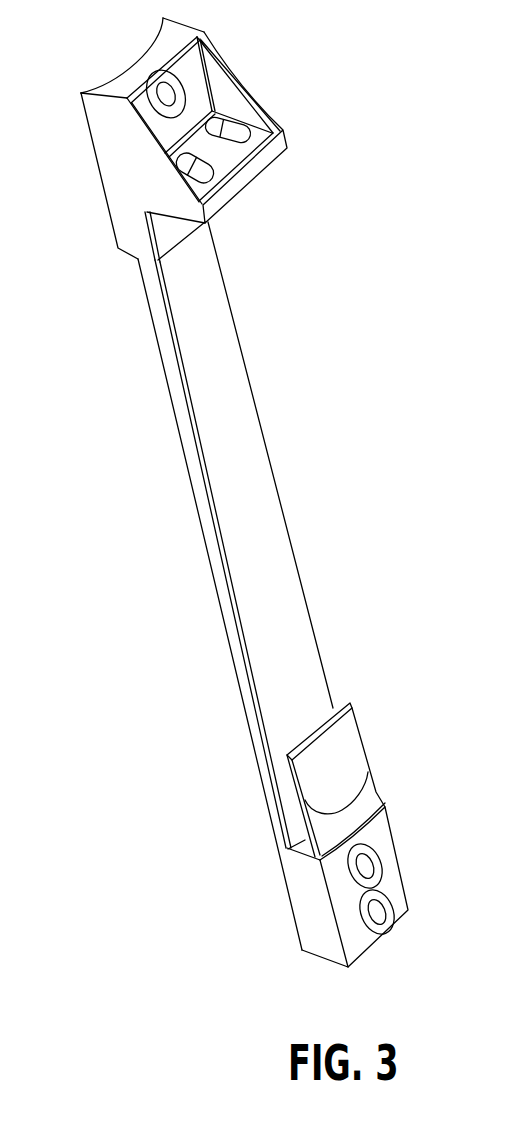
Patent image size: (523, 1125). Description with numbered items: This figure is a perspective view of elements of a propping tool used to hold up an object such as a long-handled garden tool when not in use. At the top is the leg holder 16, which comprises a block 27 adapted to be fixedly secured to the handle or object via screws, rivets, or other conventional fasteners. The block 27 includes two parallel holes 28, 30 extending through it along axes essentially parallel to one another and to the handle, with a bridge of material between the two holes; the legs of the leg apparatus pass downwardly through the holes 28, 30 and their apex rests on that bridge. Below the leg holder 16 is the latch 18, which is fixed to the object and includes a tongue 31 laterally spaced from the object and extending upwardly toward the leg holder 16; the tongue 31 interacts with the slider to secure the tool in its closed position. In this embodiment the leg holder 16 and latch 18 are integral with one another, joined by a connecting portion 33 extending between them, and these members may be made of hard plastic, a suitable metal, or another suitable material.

The leg holder 16 is at (245, 49).
The block 27 is at (183, 136).
The hole 28 is at (124, 199).
The hole 30 is at (300, 76).
The connecting portion 33 is at (305, 415).
The tongue 31 is at (417, 767).
The latch 18 is at (437, 847).